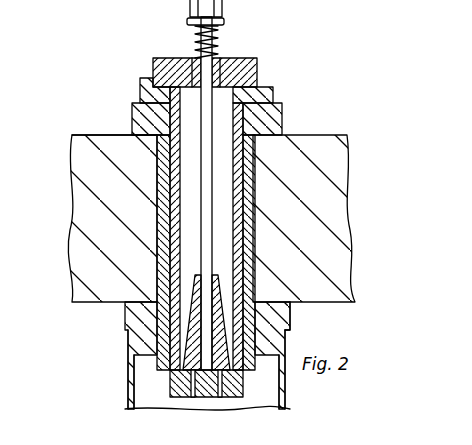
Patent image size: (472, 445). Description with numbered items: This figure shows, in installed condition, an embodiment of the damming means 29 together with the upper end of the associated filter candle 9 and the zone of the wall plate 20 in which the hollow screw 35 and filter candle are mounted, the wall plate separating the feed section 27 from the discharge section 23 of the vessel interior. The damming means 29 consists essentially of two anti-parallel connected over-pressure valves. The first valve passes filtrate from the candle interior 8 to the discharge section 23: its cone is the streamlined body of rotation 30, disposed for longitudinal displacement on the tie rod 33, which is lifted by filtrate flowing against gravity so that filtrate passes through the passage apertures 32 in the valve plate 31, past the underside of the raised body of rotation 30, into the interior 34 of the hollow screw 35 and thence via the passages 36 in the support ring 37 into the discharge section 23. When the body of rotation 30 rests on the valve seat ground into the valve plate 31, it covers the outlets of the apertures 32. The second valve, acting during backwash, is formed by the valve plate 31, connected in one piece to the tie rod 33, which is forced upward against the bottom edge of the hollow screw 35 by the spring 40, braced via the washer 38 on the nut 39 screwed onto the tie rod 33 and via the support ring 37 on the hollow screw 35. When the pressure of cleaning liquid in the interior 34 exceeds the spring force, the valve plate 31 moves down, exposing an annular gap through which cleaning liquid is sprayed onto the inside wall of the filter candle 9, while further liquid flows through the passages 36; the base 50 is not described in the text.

The candle interior 8 is at (145, 373).
The filter candle 9 is at (127, 408).
The wall plate 20 is at (100, 215).
The discharge section of the vessel interior 23 is at (95, 131).
The feed section of the vessel interior 27 is at (96, 325).
The damming means 29 is at (273, 93).
The body of rotation 30 is at (193, 333).
The valve plate 31 is at (177, 398).
The passage apertures 32 is at (193, 398).
The tie rod 33 is at (205, 129).
The interior of the hollow screw 34 is at (185, 300).
The hollow screw 35 is at (150, 93).
The passages 36 is at (188, 70).
The support ring 37 is at (250, 70).
The washer 38 is at (224, 22).
The nut 39 is at (222, 10).
The spring 40 is at (197, 44).
The base 50 is at (291, 373).